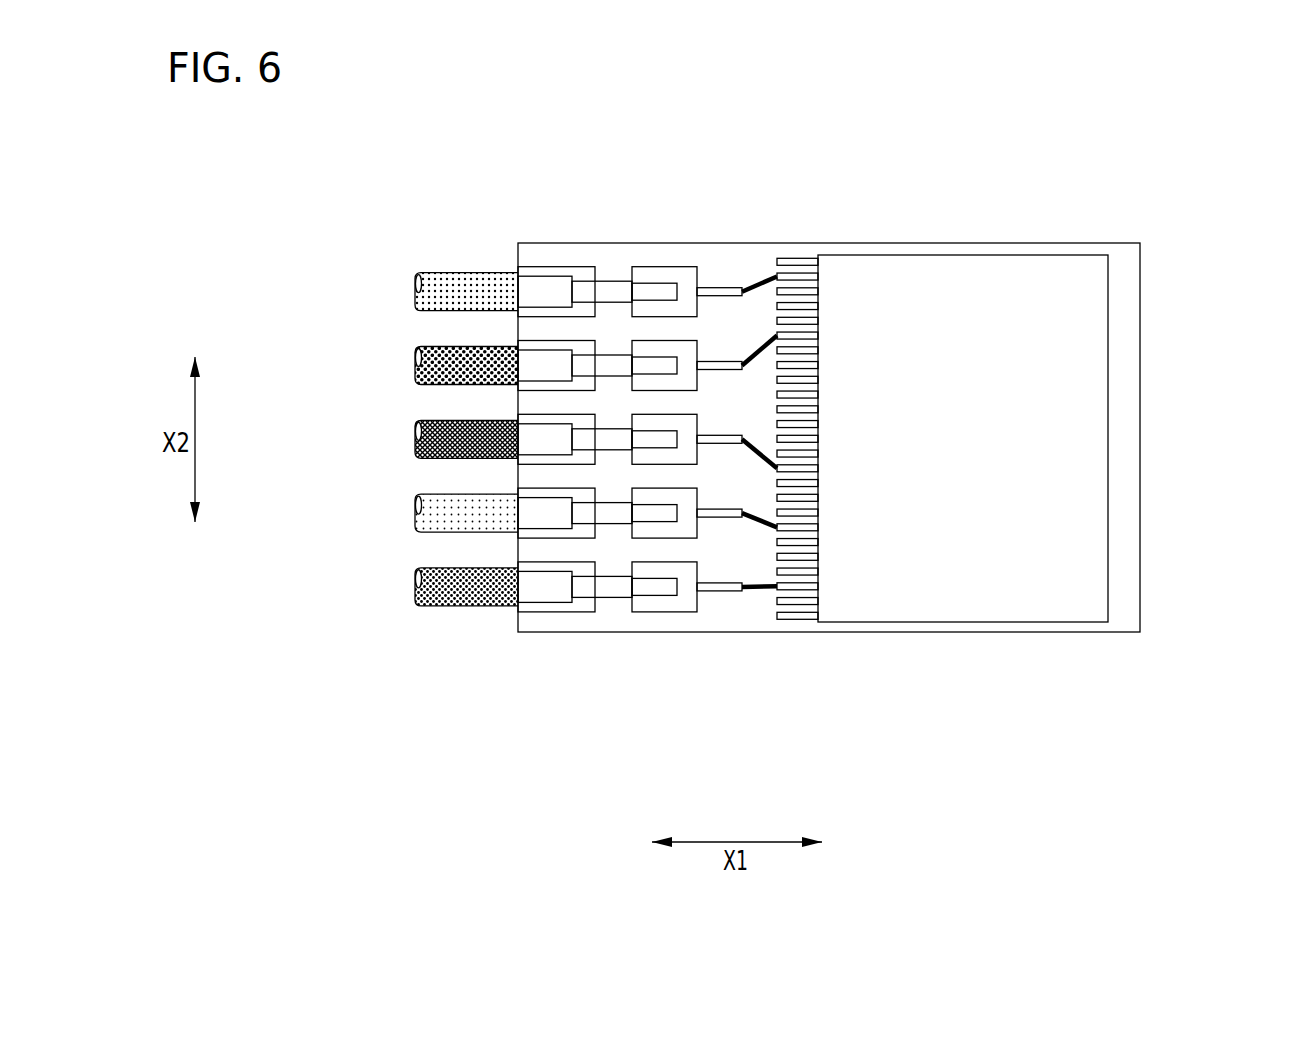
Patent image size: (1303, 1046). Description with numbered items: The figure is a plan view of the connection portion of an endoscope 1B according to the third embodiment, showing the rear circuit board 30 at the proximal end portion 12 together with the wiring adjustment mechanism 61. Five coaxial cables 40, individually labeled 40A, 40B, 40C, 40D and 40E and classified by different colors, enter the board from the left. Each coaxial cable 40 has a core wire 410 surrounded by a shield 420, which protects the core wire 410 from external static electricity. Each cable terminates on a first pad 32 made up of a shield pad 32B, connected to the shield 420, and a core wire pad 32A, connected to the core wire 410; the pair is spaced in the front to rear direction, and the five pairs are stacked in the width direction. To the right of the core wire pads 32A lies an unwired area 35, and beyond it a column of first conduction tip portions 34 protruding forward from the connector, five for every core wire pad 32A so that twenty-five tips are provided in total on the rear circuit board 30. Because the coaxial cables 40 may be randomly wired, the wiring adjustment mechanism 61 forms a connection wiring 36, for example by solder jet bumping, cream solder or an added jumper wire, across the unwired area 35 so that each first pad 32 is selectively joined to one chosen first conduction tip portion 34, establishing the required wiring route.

The endoscope 1B is at (932, 176).
The proximal end portion 12 is at (1112, 236).
The rear circuit board 30 is at (1142, 465).
The wiring adjustment mechanism 61 is at (1001, 255).
The first pad 32 is at (683, 137).
The core wire pad 32A is at (649, 267).
The shield pad 32B is at (578, 267).
The shield 420 is at (543, 276).
The core wire 410 is at (664, 283).
The first conduction tip portion 34 is at (800, 273).
The unwired area 35 is at (755, 553).
The connection wiring 36 is at (758, 283).
The coaxial cable 40 is at (395, 422).
The coaxial cable 40A is at (442, 346).
The coaxial cable 40B is at (442, 272).
The coaxial cable 40C is at (442, 568).
The coaxial cable 40D is at (442, 494).
The coaxial cable 40E is at (442, 420).